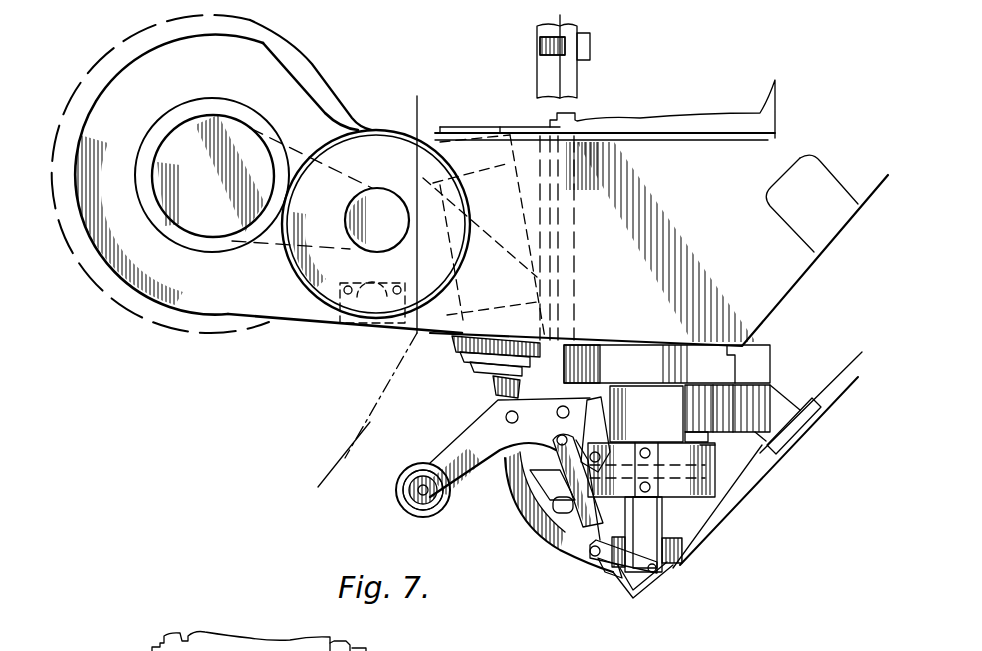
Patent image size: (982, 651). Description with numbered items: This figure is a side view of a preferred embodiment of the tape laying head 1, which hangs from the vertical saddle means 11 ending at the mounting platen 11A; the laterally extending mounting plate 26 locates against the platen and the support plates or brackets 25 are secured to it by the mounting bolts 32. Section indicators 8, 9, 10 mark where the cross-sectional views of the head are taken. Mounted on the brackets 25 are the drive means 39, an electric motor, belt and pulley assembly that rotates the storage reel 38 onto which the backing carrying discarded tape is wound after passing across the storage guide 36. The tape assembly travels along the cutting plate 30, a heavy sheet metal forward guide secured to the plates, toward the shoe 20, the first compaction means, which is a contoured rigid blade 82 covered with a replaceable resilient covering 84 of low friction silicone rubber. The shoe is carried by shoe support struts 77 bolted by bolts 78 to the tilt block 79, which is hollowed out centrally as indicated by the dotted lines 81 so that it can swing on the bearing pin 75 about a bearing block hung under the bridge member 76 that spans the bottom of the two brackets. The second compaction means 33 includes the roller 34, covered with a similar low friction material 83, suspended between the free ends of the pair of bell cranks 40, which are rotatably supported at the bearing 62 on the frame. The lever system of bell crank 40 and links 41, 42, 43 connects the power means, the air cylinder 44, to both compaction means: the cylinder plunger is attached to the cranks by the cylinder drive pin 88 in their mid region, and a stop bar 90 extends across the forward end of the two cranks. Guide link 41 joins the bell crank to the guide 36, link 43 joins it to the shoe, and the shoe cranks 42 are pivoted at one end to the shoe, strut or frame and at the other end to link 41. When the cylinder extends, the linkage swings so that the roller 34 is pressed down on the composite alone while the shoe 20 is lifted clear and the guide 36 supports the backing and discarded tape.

The head 1 is at (270, 348).
The section line 8- 8 is at (883, 305).
The section line 9- 9 is at (417, 103).
The section line 10- 10 is at (430, 66).
The vertical saddle means 11 is at (537, 27).
The mounting platen 11A is at (538, 37).
The shoe 20 is at (673, 532).
The support plates 25 is at (698, 256).
The mounting plate 26 is at (580, 33).
The cutting plate 30 is at (772, 462).
The mounting bolts 32 is at (591, 47).
The second compaction means 33 is at (456, 437).
The roller 34 is at (443, 506).
The storage guide 36 is at (541, 523).
The storage reel 38 is at (234, 120).
The drive means 39 is at (352, 224).
The bell crank 40 is at (481, 462).
The guide link 41 is at (563, 506).
The shoe crank 42 is at (603, 574).
The guide link 43 is at (568, 404).
The air cylinder 44 is at (500, 294).
The bearing 62 is at (597, 452).
The bearing pin 75 is at (720, 478).
The bridge member 76 is at (703, 409).
The shoe support struts 77 is at (656, 528).
The bolts 78 is at (655, 485).
The tilt block 79 is at (702, 447).
The dotted lines 81 is at (599, 490).
The blade 82 is at (626, 582).
The roller covering 83 is at (406, 480).
The resilient covering 84 is at (674, 580).
The cylinder drive pin 88 is at (506, 414).
The stop bar 90 is at (598, 396).